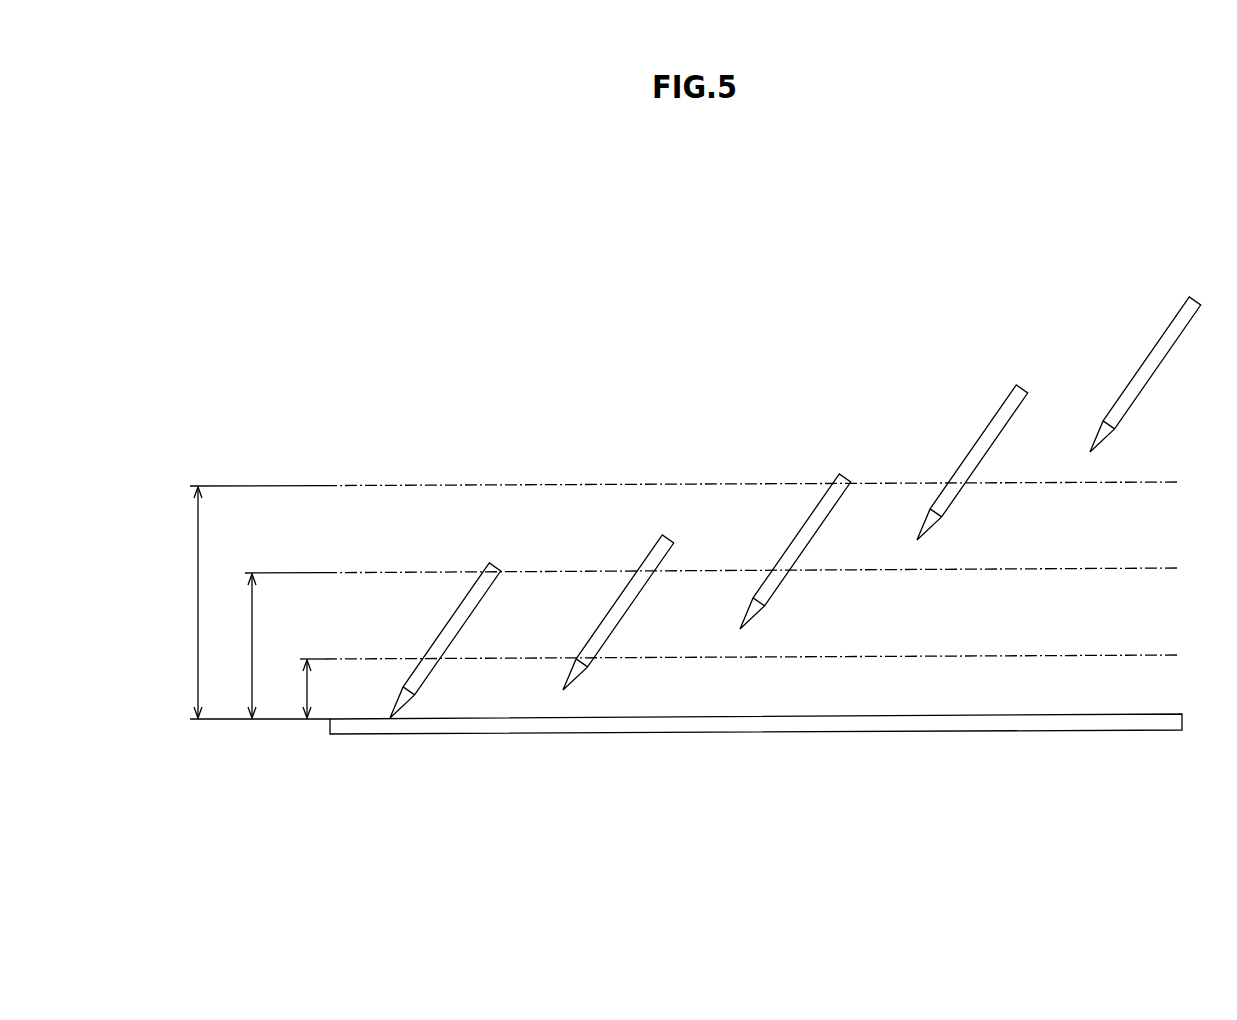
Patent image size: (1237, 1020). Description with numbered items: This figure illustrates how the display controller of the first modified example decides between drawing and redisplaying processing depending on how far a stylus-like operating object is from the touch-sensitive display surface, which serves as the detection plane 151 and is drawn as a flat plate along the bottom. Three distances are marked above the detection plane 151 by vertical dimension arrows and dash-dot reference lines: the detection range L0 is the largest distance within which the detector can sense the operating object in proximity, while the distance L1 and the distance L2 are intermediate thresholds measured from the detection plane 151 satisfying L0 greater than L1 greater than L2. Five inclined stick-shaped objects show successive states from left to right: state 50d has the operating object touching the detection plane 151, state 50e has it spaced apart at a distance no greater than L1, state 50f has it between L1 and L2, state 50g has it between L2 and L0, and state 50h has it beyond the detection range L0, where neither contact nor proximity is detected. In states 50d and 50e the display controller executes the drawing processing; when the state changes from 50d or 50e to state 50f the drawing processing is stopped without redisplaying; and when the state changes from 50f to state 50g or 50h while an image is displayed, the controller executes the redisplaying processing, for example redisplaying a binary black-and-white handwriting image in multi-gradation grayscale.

The state in which the operating object touches the detection plane 50d is at (489, 562).
The state in which the operating object is within distance L1 of the detection plane 50e is at (662, 534).
The state in which the operating object is between distances L1 and L2 50f is at (839, 473).
The state in which the operating object is between distances L2 and L0 50g is at (1016, 384).
The state in which the operating object is outside the detection range 50h is at (1189, 296).
The detection plane 151 is at (1156, 713).
The detection range L0 is at (672, 600).
The distance threshold L1 is at (702, 643).
The distance threshold L2 is at (729, 686).